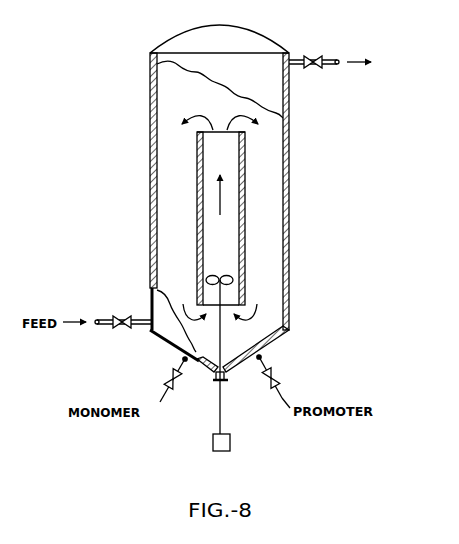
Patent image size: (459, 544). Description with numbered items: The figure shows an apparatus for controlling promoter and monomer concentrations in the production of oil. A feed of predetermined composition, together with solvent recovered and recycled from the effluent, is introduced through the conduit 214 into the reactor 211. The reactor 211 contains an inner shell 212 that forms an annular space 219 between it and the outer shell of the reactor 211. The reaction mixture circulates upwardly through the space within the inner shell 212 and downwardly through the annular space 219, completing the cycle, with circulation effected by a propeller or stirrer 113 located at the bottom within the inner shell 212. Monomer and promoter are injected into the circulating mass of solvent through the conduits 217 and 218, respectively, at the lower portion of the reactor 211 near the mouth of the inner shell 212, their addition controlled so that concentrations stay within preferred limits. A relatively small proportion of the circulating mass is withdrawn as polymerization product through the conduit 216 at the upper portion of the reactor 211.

The reactor 211 is at (290, 229).
The inner shell 212 is at (242, 183).
The conduit 218 is at (208, 170).
The annular space 219 is at (168, 165).
The agitator impeller 113 is at (216, 275).
The conduit 214 is at (108, 317).
The conduit 216 is at (300, 58).
The conduit 217 is at (159, 402).